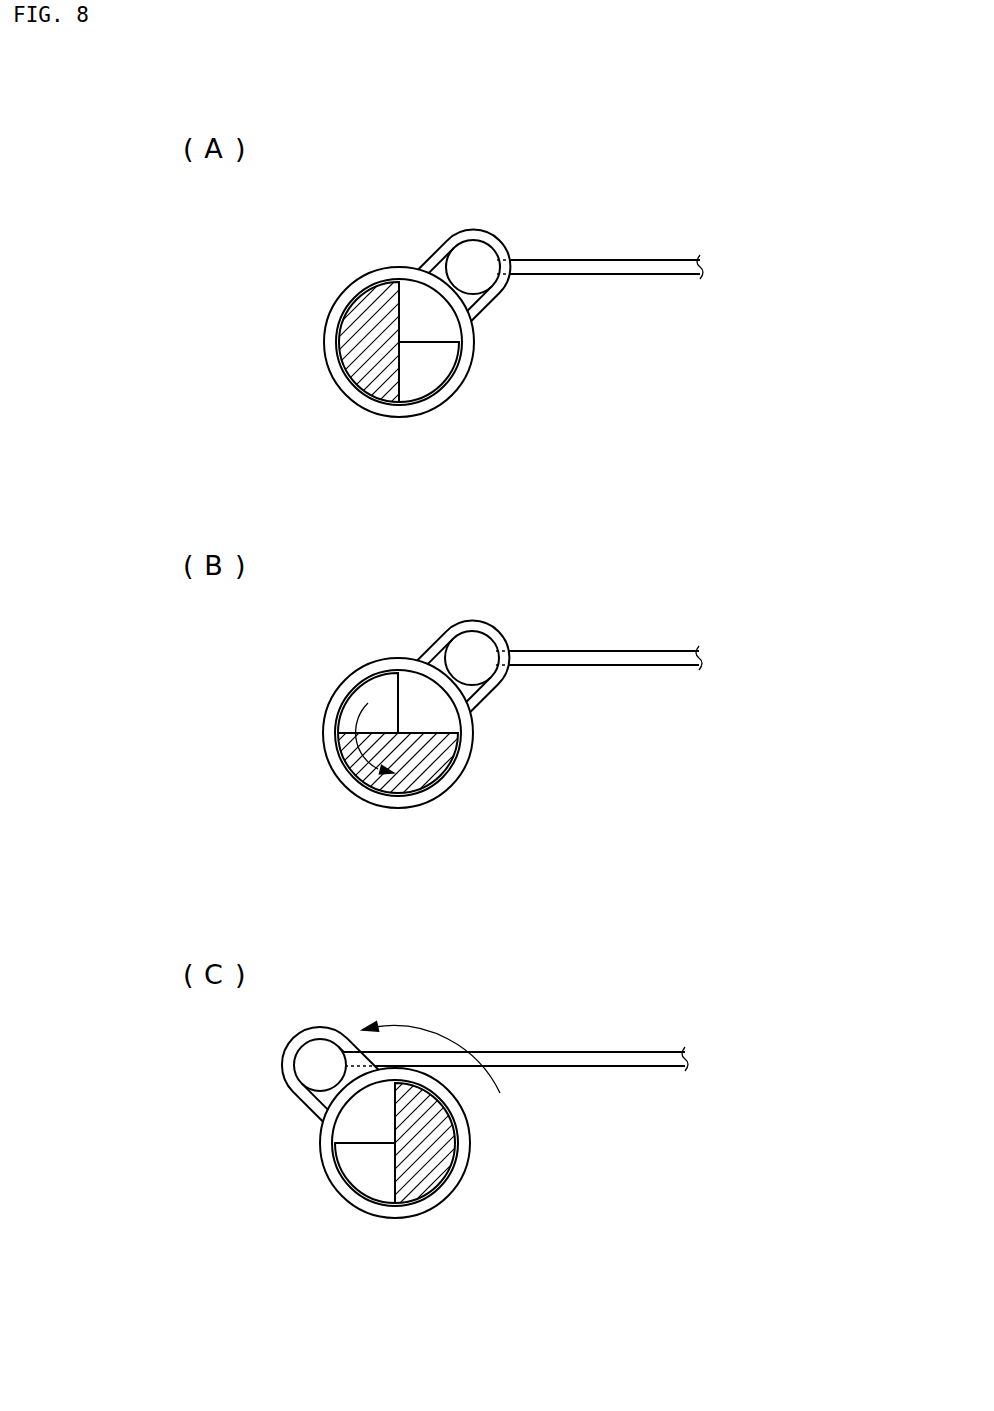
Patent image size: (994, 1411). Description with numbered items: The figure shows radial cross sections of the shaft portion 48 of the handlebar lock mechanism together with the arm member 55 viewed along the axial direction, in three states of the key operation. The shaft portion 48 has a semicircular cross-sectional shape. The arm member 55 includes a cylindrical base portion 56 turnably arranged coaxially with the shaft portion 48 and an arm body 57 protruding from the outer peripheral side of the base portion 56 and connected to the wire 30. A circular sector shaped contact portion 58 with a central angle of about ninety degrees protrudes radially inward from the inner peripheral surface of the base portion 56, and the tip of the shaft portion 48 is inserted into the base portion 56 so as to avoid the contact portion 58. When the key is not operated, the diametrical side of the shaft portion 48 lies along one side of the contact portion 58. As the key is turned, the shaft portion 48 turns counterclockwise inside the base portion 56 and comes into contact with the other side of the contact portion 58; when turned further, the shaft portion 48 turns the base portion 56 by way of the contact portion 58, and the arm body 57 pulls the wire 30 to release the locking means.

The wire 30 is at (523, 625).
The shaft portion 48 is at (397, 754).
The arm member 55 is at (397, 723).
The base portion 56 is at (375, 784).
The arm body 57 is at (396, 634).
The contact portion 58 is at (374, 781).